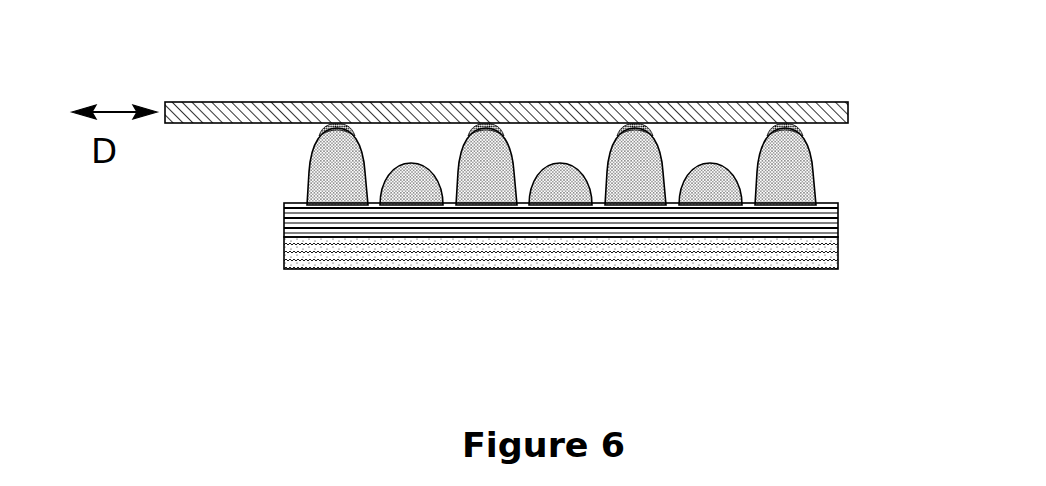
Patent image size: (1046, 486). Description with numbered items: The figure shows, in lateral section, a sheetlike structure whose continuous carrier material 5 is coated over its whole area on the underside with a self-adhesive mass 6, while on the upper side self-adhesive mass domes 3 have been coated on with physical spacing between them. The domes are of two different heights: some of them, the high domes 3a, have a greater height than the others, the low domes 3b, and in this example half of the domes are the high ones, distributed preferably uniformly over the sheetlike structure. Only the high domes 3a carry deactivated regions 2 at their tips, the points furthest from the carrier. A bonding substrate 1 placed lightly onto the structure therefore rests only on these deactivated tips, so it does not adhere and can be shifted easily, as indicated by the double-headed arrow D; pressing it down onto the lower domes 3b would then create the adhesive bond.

The bonding substrate 1 is at (845, 113).
The deactivated regions 2 is at (797, 130).
The self-adhesive mass domes 3 is at (615, 240).
The high self-adhesive mass domes 3a is at (638, 177).
The low self-adhesive mass domes 3b is at (405, 183).
The carrier material 5 is at (833, 222).
The self-adhesive mass 6 is at (718, 253).